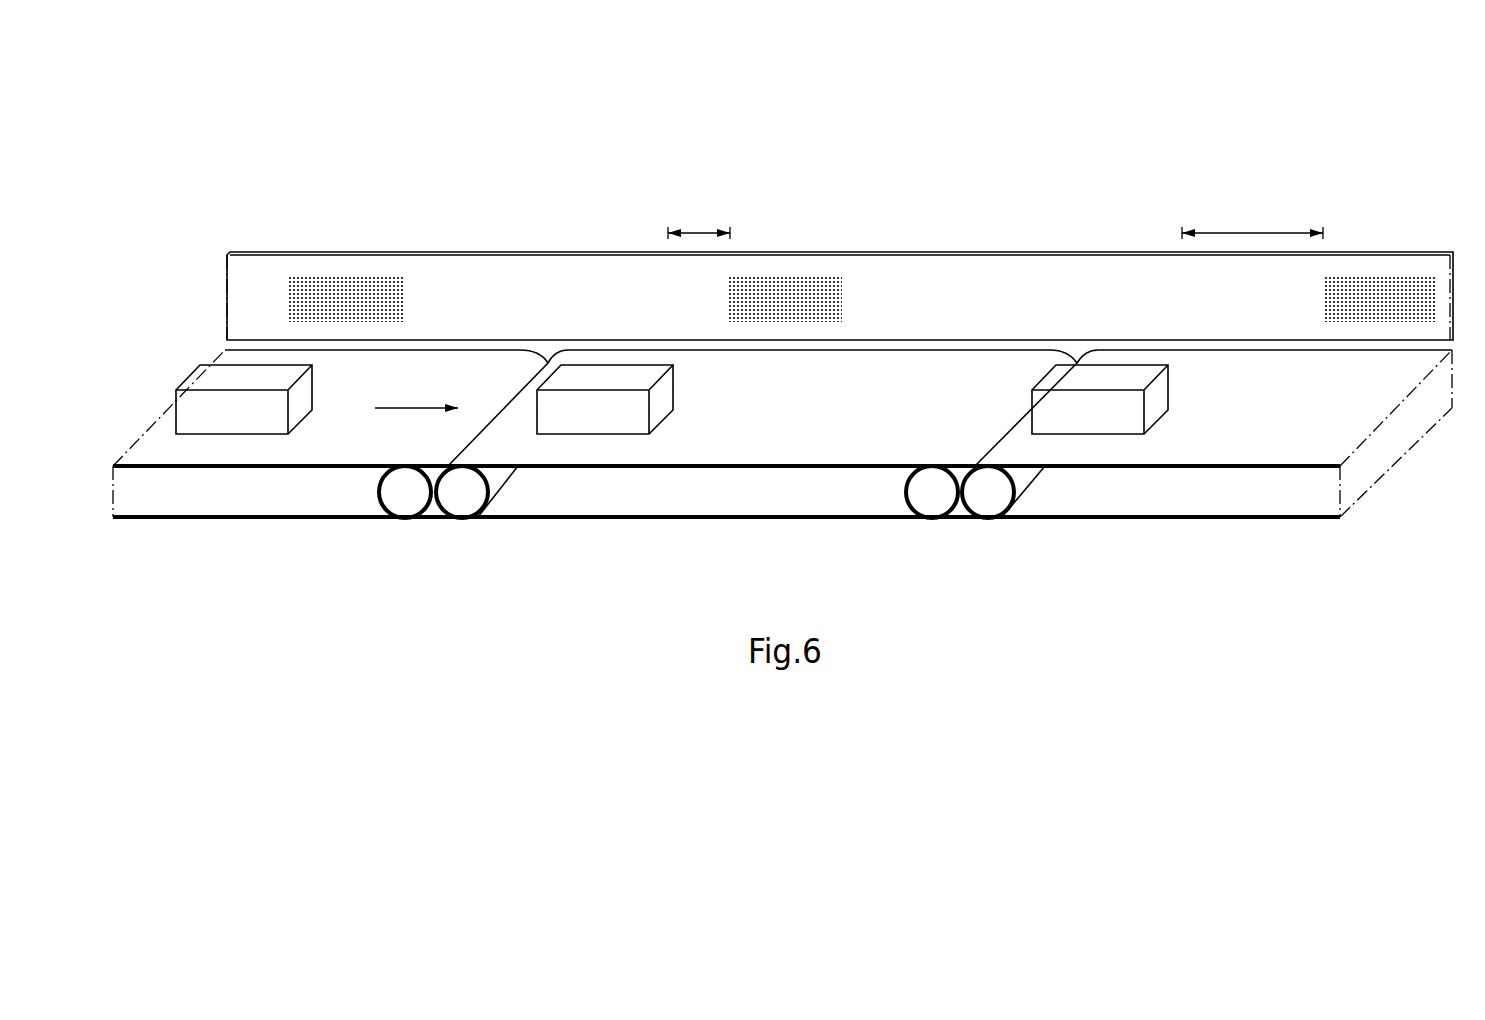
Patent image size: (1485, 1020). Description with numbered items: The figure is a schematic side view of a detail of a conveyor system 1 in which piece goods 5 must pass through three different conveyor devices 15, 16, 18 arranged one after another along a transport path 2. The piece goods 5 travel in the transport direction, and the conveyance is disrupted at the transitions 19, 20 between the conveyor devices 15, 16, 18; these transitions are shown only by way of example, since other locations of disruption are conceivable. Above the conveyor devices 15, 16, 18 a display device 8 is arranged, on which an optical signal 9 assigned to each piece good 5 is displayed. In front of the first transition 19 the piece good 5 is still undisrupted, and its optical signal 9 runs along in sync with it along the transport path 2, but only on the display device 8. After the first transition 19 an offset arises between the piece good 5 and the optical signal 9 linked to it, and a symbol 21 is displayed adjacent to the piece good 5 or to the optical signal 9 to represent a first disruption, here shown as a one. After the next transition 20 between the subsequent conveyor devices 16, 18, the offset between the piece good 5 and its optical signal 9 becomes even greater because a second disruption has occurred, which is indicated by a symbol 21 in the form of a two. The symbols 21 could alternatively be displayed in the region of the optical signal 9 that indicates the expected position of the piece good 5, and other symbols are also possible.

The conveyor system 1 is at (207, 130).
The transport path 2 is at (870, 420).
The piece goods 5 is at (305, 397).
The display device 8 is at (263, 252).
The optical signal 9 is at (412, 298).
The conveyor device 15 is at (343, 447).
The conveyor device 16 is at (723, 447).
The conveyor device 18 is at (1267, 447).
The first transition 19 is at (430, 543).
The second transition 20 is at (955, 545).
The symbol 21 is at (629, 300).